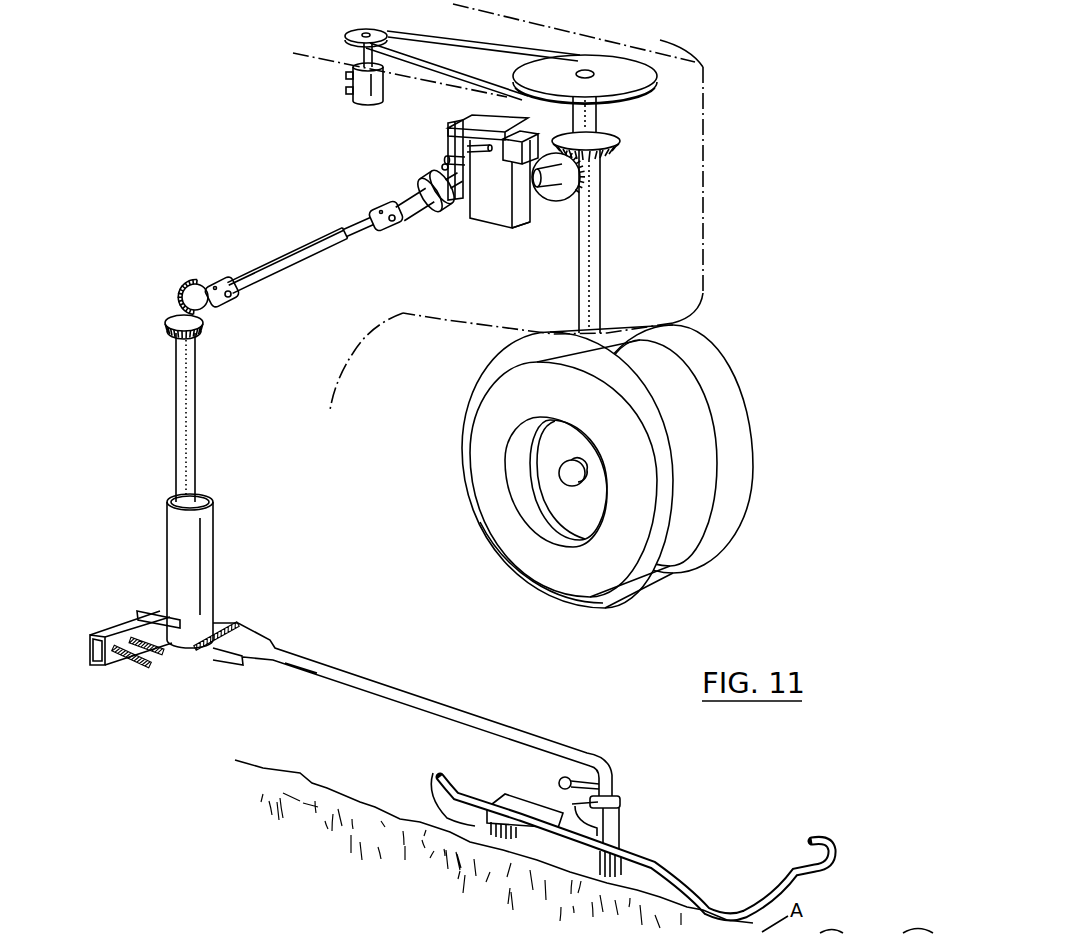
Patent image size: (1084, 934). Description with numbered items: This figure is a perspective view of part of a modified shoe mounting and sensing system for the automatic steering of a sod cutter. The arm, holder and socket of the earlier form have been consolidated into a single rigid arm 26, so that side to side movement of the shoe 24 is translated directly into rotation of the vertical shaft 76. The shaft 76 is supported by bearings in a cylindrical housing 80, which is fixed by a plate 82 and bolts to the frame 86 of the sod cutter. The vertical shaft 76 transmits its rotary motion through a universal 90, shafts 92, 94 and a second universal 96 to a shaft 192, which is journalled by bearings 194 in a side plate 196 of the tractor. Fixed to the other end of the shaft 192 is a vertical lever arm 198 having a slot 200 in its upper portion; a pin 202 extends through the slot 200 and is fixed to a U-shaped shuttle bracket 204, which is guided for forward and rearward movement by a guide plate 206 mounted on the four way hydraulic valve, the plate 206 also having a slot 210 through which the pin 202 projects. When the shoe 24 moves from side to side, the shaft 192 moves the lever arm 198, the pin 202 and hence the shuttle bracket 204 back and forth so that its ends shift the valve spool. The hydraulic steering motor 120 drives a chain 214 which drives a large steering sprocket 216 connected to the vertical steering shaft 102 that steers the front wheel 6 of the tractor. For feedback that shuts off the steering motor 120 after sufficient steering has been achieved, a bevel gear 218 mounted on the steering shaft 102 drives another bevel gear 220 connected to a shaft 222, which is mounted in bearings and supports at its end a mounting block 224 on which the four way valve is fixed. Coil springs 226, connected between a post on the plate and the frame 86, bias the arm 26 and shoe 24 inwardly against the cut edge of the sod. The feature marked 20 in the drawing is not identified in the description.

The front wheel 6 is at (745, 415).
The ground surface 20 is at (372, 802).
The shoe 24 is at (696, 861).
The rigid arm 26 is at (497, 723).
The vertical shaft 76 is at (193, 433).
The cylindrical housing 80 is at (212, 562).
The plate 82 is at (163, 607).
The frame 86 is at (115, 625).
The universal 90 is at (227, 303).
The shaft 92 is at (293, 268).
The shaft 94 is at (355, 233).
The universal joint 96 is at (393, 227).
The vertical steering shaft 102 is at (598, 250).
The hydraulic steering motor 120 is at (383, 88).
The shaft 192 is at (413, 218).
The bearings 194 is at (413, 192).
The side plate 196 is at (467, 325).
The vertical lever arm 198 is at (478, 183).
The slot 200 is at (450, 153).
The pin 202 is at (443, 160).
The U-shaped shuttle bracket 204 is at (466, 142).
The guide plate 206 is at (507, 175).
The slot 210 is at (478, 135).
The chain 214 is at (425, 32).
The steering sprocket 216 is at (620, 77).
The bevel gear 218 is at (618, 133).
The bevel gear 220 is at (586, 178).
The shaft 222 is at (553, 195).
The mounting block 224 is at (525, 228).
The coil springs 226 is at (130, 662).